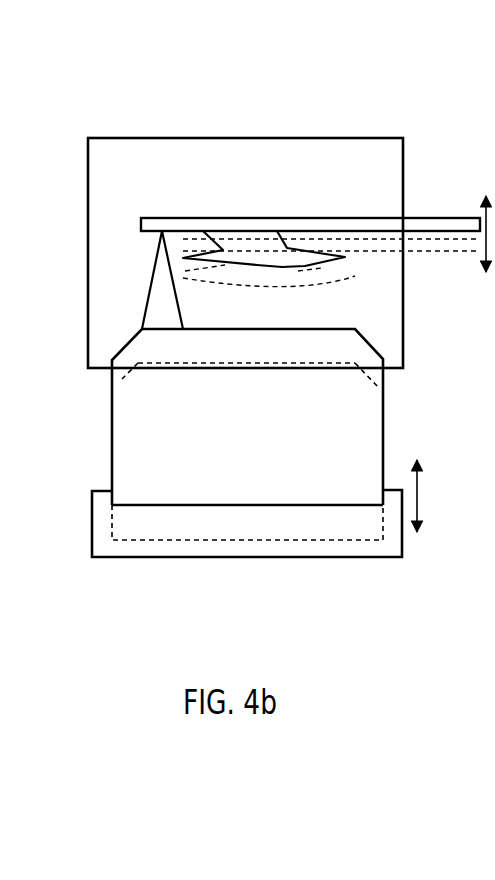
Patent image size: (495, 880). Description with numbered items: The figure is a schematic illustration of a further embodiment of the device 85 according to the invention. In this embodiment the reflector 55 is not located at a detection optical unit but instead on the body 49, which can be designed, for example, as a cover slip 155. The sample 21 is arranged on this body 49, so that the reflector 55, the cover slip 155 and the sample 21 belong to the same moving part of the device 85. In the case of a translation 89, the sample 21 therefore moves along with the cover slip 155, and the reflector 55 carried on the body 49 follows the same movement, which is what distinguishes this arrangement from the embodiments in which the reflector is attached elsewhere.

The device 85 is at (80, 87).
The body 49 is at (310, 176).
The cover slip 155 is at (345, 228).
The reflector 55 is at (443, 228).
The sample 21 is at (347, 257).
The translation 89 is at (418, 500).